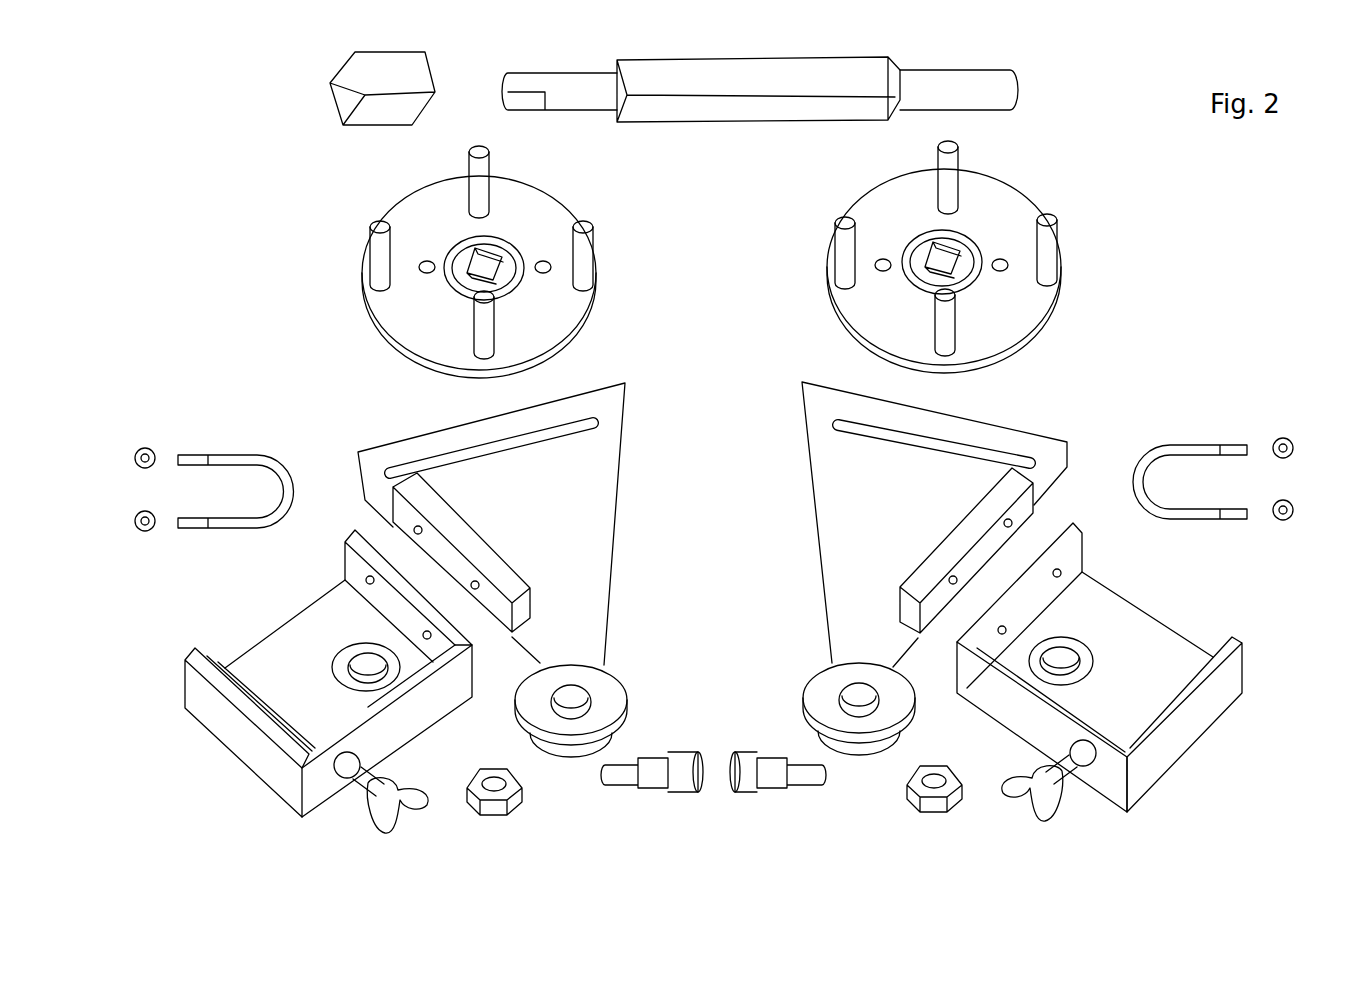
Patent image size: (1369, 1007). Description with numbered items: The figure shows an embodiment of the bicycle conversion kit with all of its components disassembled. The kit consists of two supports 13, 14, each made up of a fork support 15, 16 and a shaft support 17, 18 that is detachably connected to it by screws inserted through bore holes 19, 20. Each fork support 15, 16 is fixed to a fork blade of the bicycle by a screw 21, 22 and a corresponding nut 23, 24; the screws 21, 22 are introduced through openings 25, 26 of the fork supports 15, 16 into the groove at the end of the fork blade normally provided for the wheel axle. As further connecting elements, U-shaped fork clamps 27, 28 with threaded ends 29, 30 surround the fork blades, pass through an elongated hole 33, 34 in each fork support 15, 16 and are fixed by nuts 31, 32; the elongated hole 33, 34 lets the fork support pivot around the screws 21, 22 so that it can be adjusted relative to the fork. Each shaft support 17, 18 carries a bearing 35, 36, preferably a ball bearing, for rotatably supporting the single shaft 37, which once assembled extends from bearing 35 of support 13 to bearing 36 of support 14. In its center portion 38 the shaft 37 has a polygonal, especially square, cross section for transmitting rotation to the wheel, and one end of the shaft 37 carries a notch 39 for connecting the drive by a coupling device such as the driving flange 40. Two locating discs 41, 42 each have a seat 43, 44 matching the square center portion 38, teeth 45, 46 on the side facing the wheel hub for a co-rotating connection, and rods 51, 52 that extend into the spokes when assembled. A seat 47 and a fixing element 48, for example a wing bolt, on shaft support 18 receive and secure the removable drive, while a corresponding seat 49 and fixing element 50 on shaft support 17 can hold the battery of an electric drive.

The support 13 is at (1126, 667).
The support 14 is at (304, 673).
The fork support 15 is at (896, 561).
The fork support 16 is at (531, 539).
The shaft support 17 is at (1183, 730).
The shaft support 18 is at (227, 717).
The bore hole 19 is at (1008, 525).
The bore hole 20 is at (370, 577).
The screw 21 is at (768, 775).
The screw 22 is at (653, 772).
The nut 23 is at (920, 798).
The nut 24 is at (512, 800).
The opening 25 is at (845, 700).
The opening 26 is at (592, 690).
The fork clamp 27 is at (1202, 447).
The fork clamp 28 is at (257, 455).
The threaded end 29 is at (1237, 445).
The threaded end 30 is at (198, 455).
The nut 31 is at (1290, 522).
The nut 32 is at (143, 532).
The elongated hole 33 is at (947, 447).
The elongated hole 34 is at (552, 432).
The bearing 35 is at (1040, 664).
The bearing 36 is at (388, 676).
The shaft 37 is at (760, 134).
The center portion 38 is at (805, 112).
The notch 39 is at (523, 102).
The driving flange 40 is at (350, 88).
The locating disc 41 is at (949, 244).
The locating disc 42 is at (486, 262).
The seat 43 is at (1020, 290).
The seat 44 is at (460, 285).
The teeth 45 is at (876, 274).
The teeth 46 is at (551, 268).
The seat 47 is at (272, 680).
The fixing element 48 is at (373, 815).
The seat 49 is at (1148, 670).
The fixing element 50 is at (1040, 810).
The rods 51 is at (955, 172).
The rods 52 is at (583, 246).